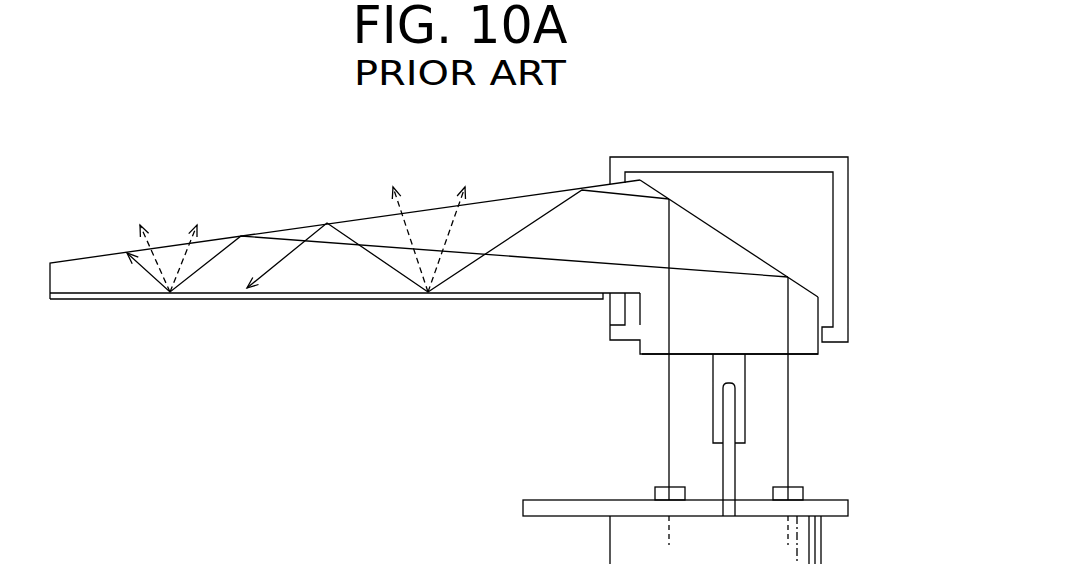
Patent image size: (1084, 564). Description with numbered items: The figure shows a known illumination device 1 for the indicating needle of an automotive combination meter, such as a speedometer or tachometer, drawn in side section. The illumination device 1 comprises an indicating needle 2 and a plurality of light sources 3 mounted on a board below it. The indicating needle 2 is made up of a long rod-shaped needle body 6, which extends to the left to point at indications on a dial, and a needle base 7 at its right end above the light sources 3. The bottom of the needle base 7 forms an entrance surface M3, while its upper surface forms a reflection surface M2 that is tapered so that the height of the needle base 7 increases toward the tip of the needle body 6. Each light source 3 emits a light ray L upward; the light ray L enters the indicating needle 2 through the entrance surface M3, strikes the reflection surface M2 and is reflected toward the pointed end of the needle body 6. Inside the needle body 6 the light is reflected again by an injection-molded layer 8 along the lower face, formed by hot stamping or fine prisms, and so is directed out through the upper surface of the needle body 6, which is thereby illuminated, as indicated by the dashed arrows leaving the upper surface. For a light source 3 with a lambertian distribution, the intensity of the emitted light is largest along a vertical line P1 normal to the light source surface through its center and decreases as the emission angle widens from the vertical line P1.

The illumination device 1 is at (803, 140).
The indicating needle 2 is at (299, 228).
The light source 3 is at (657, 487).
The needle body 6 is at (128, 280).
The needle base 7 is at (758, 306).
The injection-molded layer 8 is at (318, 300).
The light ray L is at (669, 408).
The reflection surface M2 is at (752, 251).
The entrance surface M3 is at (642, 356).
The vertical line P1 is at (669, 533).